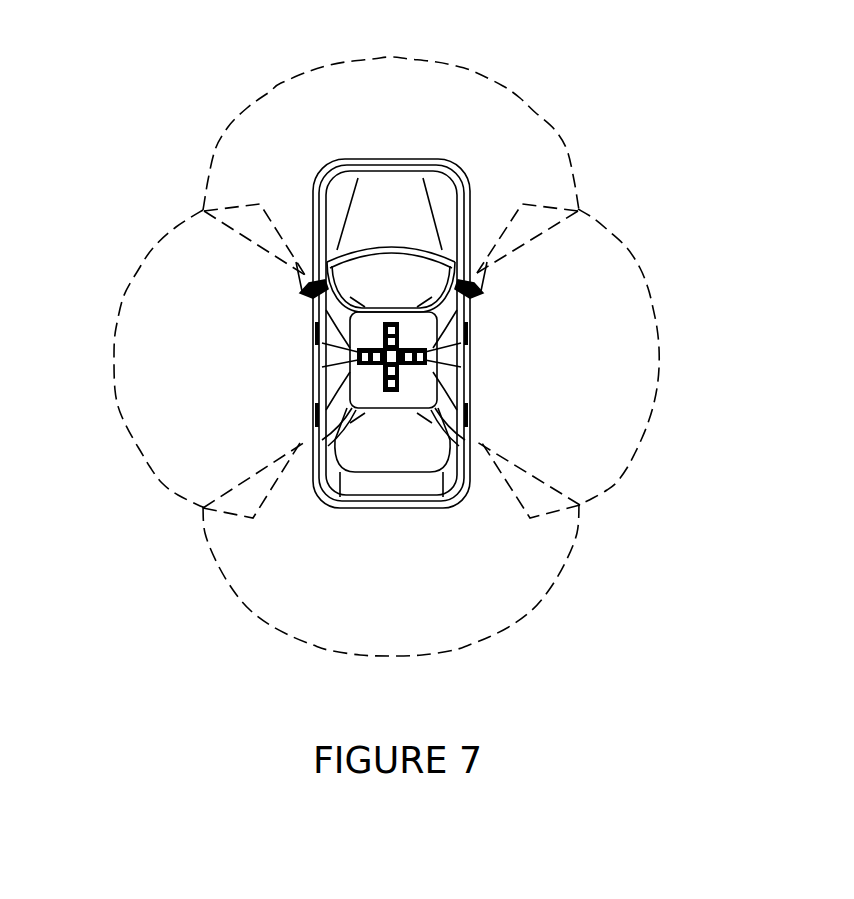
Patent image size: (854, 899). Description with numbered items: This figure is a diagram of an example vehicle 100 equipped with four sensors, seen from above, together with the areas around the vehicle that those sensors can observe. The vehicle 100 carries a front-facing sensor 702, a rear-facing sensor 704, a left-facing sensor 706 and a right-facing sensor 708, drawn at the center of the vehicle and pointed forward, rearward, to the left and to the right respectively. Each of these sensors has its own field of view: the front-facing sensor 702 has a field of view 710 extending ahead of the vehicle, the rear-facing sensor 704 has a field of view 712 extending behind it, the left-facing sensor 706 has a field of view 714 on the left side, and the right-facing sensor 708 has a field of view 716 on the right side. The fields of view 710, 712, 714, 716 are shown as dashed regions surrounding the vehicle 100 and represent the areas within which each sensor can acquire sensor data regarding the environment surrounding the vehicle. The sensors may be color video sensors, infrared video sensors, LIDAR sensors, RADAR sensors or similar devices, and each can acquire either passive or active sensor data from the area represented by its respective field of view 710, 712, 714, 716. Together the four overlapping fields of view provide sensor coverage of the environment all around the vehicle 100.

The vehicle 100 is at (432, 158).
The front-facing sensor 702 is at (393, 322).
The rear-facing sensor 704 is at (392, 396).
The left-facing sensor 706 is at (358, 358).
The right-facing sensor 708 is at (427, 358).
The field of view 710 is at (275, 88).
The field of view 712 is at (236, 593).
The field of view 714 is at (163, 483).
The field of view 716 is at (605, 489).